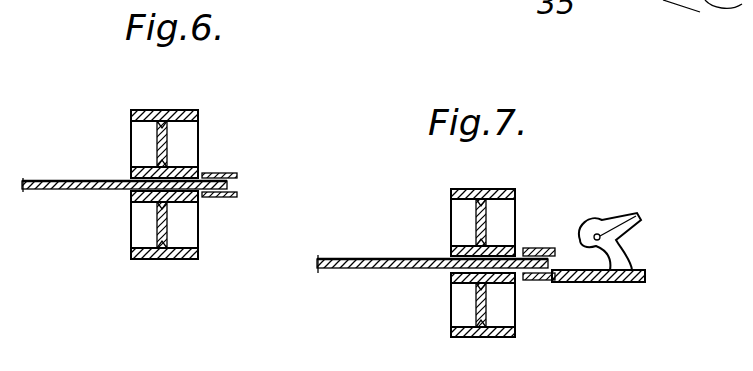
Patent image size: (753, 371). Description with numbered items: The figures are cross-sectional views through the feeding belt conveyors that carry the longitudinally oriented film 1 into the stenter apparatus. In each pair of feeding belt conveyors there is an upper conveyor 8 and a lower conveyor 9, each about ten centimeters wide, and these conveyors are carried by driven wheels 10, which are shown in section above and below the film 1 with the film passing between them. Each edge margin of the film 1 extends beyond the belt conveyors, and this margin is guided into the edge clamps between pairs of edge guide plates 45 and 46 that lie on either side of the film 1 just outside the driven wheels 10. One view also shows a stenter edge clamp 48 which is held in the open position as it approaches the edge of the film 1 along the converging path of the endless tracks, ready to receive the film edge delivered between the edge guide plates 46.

In FIG. 6, the longitudinally oriented film 1 is at (85, 183).
In FIG. 7, the longitudinally oriented film 1 is at (383, 260).
In FIG. 6, the upper conveyor 8 is at (165, 110).
In FIG. 7, the upper conveyor 8 is at (500, 189).
In FIG. 6, the lower conveyor 9 is at (158, 259).
In FIG. 7, the lower conveyor 9 is at (470, 338).
In FIG. 6, the driven wheels 10 is at (185, 145).
In FIG. 7, the driven wheels 10 is at (455, 210).
In FIG. 6, the edge guide plates 45 is at (237, 194).
In FIG. 7, the edge guide plates 46 is at (538, 248).
In FIG. 7, the stenter edge clamp 48 is at (625, 222).